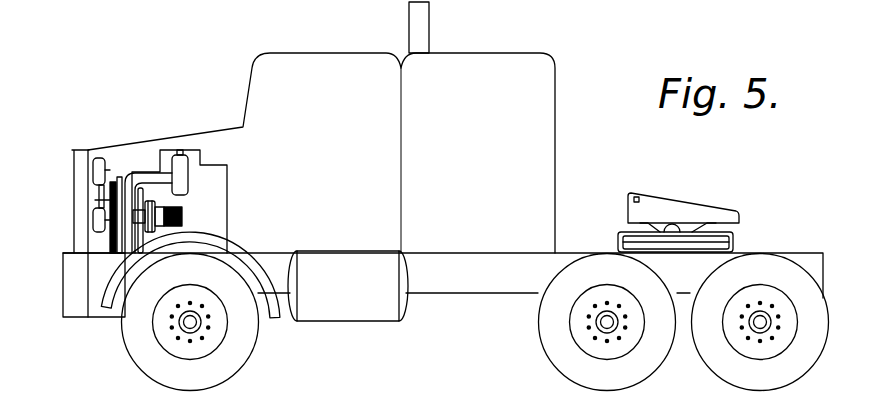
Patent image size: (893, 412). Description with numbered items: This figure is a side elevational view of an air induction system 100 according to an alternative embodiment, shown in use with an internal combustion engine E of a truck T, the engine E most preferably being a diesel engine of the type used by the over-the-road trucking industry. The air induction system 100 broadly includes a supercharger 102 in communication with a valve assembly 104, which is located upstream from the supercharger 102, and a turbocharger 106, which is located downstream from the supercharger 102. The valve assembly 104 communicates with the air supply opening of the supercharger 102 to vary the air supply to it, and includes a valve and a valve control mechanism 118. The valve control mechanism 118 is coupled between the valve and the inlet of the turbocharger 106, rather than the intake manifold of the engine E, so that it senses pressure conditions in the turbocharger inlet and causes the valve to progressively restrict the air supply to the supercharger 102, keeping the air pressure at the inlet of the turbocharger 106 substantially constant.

The air induction system 100 is at (130, 155).
The supercharger 102 is at (112, 213).
The valve assembly 104 is at (131, 256).
The turbocharger 106 is at (180, 150).
The valve control mechanism 118 is at (140, 198).
The internal combustion engine E is at (215, 186).
The truck T is at (318, 63).